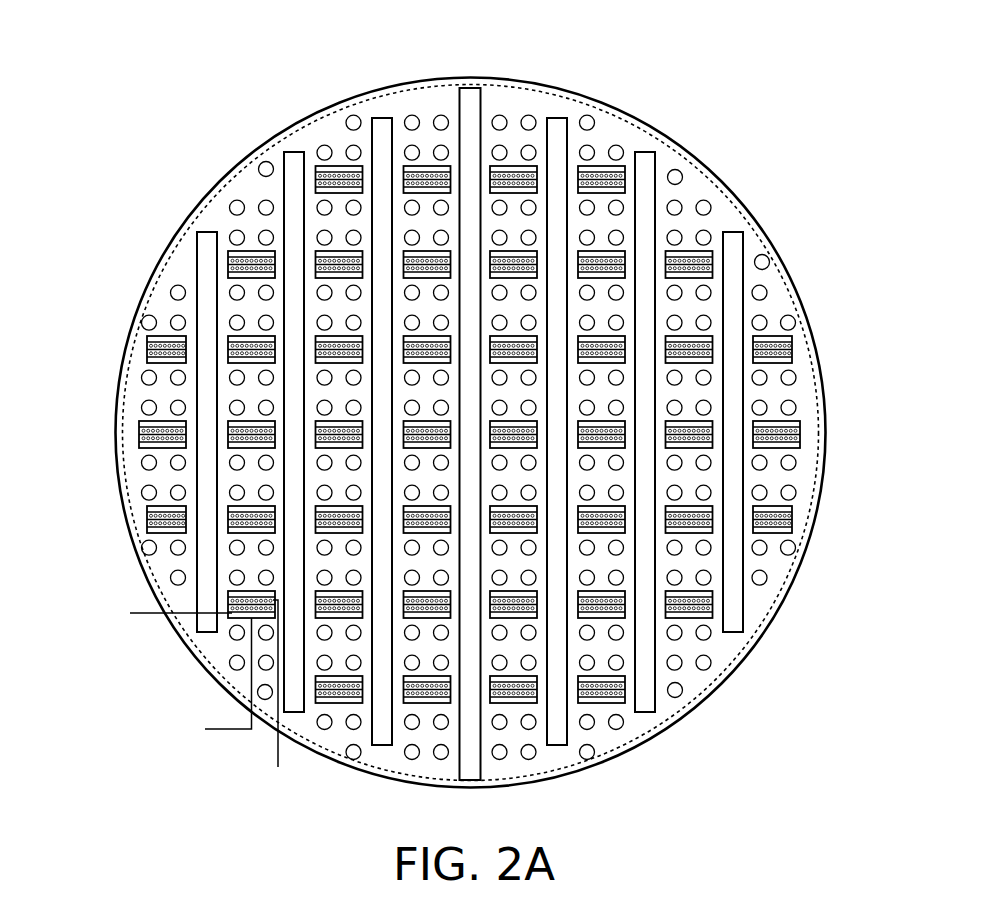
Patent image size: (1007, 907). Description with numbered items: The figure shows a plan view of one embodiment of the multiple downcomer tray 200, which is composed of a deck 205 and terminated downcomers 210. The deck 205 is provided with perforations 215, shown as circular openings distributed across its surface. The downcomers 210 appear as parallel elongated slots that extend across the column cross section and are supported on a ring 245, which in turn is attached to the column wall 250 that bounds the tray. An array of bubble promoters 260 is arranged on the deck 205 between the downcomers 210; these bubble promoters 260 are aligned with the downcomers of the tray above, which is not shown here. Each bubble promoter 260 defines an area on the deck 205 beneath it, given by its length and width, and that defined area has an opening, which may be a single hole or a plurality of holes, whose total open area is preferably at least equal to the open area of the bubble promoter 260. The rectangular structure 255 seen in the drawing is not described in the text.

The multiple downcomer tray 200 is at (181, 114).
The deck 205 is at (163, 298).
The terminated downcomers 210 is at (200, 232).
The perforations 215 is at (147, 320).
The ring 245 is at (755, 233).
The column wall 250 is at (783, 263).
The rectangular structure 255 is at (688, 617).
The bubble promoters 260 is at (707, 598).